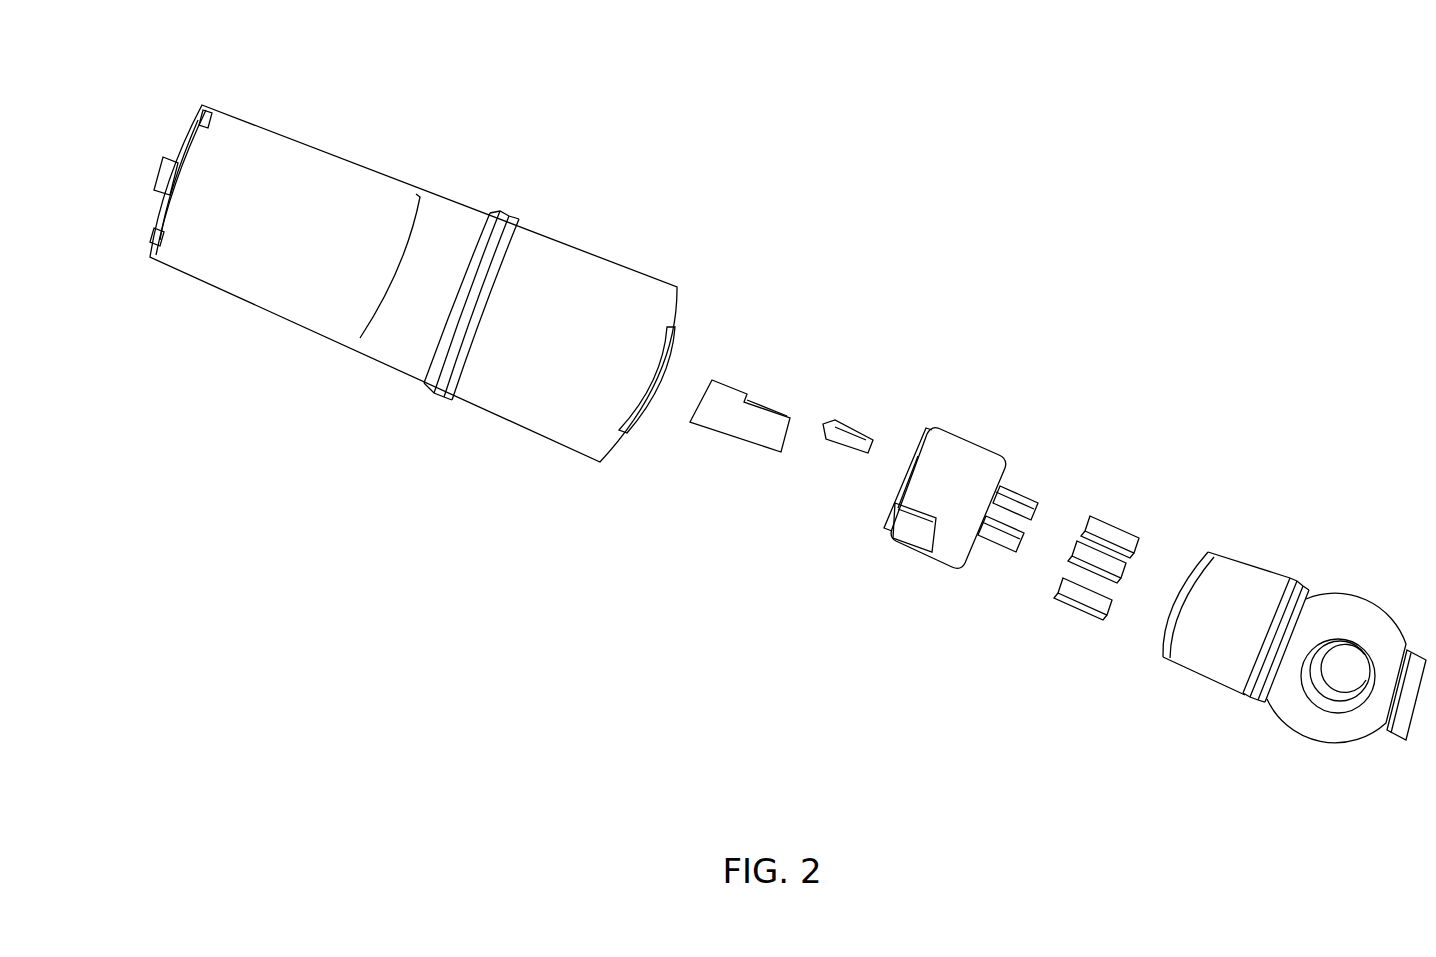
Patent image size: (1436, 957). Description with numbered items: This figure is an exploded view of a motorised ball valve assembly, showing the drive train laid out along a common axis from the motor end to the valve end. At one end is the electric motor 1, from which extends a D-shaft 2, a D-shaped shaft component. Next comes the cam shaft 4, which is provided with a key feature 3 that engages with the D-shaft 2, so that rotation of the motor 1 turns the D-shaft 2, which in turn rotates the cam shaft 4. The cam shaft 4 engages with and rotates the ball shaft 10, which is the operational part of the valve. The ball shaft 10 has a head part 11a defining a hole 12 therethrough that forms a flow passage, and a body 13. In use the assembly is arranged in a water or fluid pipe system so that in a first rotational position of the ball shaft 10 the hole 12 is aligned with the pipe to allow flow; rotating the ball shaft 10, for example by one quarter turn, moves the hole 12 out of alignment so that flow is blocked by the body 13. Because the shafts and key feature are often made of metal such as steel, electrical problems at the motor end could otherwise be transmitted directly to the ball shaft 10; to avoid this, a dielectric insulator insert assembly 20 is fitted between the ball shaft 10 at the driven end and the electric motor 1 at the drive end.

The electric motor 1 is at (233, 165).
The D-shaft 2 is at (733, 417).
The key feature 3 is at (848, 430).
The cam shaft 4 is at (1007, 523).
The ball shaft 10 is at (1280, 655).
The head part 11a is at (1390, 703).
The hole 12 is at (1340, 668).
The body 13 is at (1205, 642).
The dielectric insulator insert assembly 20 is at (1072, 607).